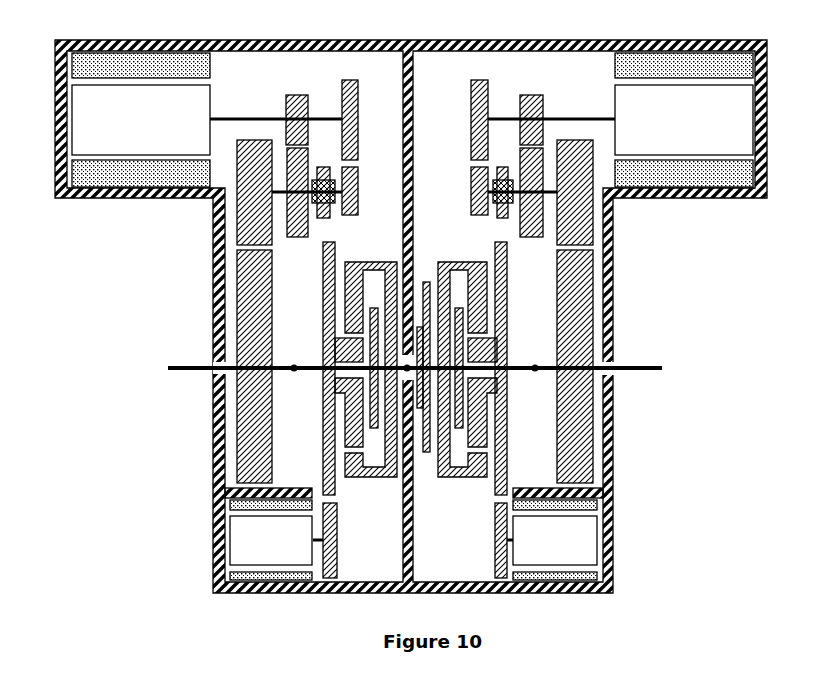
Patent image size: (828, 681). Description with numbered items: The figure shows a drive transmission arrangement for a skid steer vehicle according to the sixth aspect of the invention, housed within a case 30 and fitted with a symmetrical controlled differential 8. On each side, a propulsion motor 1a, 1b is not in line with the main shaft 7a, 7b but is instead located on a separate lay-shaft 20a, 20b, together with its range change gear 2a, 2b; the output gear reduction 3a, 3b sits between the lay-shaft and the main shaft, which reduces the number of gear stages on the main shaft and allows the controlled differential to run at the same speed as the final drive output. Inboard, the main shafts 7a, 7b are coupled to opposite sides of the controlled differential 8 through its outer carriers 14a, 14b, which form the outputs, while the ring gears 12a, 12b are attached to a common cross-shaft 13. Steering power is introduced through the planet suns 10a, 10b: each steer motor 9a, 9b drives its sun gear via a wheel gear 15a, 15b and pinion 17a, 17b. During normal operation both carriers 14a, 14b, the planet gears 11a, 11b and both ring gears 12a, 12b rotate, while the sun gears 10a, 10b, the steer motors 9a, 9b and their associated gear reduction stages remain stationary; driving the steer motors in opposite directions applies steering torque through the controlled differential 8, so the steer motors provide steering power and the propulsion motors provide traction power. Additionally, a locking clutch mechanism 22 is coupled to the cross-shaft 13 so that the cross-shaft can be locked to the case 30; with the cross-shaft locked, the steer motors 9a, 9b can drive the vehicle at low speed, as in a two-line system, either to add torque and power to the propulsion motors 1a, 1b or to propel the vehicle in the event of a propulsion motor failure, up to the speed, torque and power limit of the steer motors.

The propulsion motor 1a is at (141, 119).
The propulsion motor 1b is at (683, 121).
The range change gear 2a is at (296, 171).
The range change gear 2b is at (532, 173).
The output gear reduction 3a is at (252, 319).
The output gear reduction 3b is at (577, 321).
The main shaft 7a is at (237, 360).
The main shaft 7b is at (615, 362).
The controlled differential 8 is at (392, 255).
The steer motor 9a is at (262, 551).
The steer motor 9b is at (559, 554).
The sun gear 10a is at (356, 350).
The sun gear 10b is at (478, 349).
The planet gear 11a is at (356, 423).
The planet gear 11b is at (480, 429).
The ring gear 12a is at (392, 300).
The ring gear 12b is at (444, 299).
The cross-shaft 13 is at (408, 362).
The carrier 14a is at (377, 401).
The carrier 14b is at (456, 400).
The wheel gear 15a is at (329, 465).
The wheel gear 15b is at (502, 466).
The pinion 17a is at (329, 511).
The pinion 17b is at (502, 534).
The lay-shaft 20a is at (243, 119).
The lay-shaft 20b is at (577, 120).
The locking clutch mechanism 22 is at (427, 292).
The case 30 is at (100, 200).